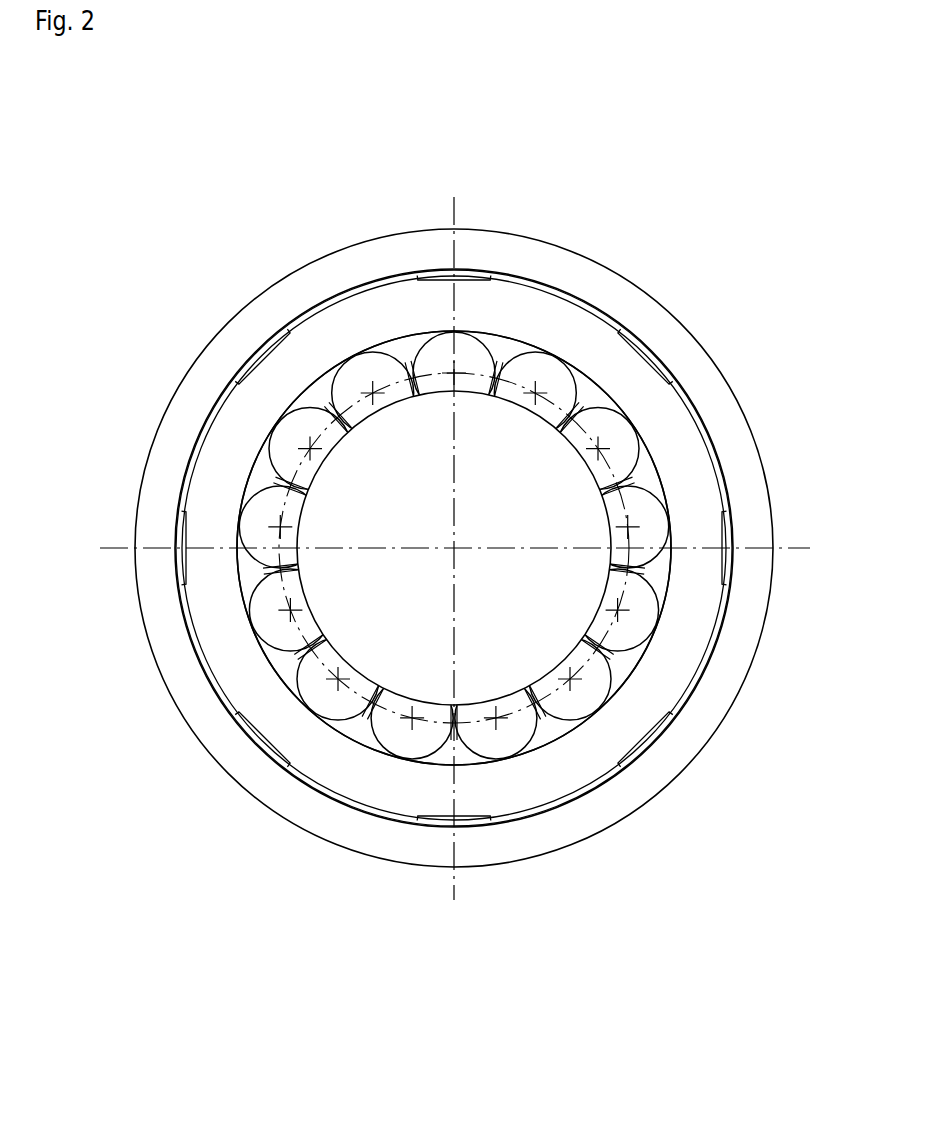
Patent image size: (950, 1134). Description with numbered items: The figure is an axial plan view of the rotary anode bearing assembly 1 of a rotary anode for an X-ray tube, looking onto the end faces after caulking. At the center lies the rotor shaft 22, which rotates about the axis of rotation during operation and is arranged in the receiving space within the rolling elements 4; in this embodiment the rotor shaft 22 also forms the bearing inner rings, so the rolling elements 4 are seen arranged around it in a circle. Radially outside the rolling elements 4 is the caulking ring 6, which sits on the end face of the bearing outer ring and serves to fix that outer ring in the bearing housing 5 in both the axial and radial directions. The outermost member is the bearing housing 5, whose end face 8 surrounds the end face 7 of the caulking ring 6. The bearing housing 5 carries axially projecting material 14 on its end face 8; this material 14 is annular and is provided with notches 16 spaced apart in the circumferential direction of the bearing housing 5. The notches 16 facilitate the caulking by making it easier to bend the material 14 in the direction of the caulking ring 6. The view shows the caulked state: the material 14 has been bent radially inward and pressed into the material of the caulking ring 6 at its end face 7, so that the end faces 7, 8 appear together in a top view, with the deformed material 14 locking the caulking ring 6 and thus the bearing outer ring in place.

The rotary anode bearing assembly 1 is at (678, 293).
The rolling elements 4 is at (290, 443).
The bearing housing 5 is at (268, 312).
The caulking ring 6 is at (595, 352).
The end face of the caulking ring 7 is at (665, 437).
The end face of the bearing housing 8 is at (348, 273).
The axially projecting material 14 is at (348, 800).
The notches 16 is at (260, 740).
The rotor shaft 22 is at (497, 485).